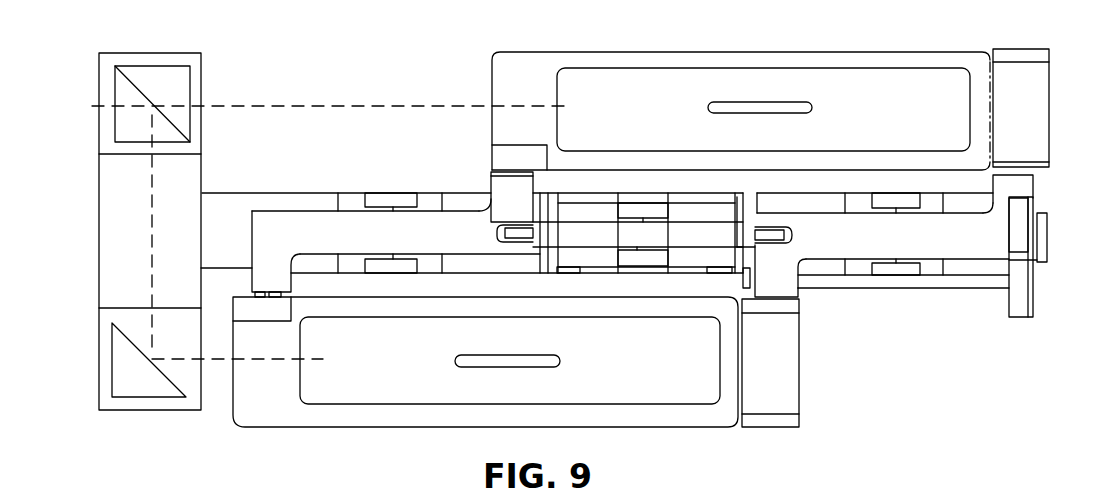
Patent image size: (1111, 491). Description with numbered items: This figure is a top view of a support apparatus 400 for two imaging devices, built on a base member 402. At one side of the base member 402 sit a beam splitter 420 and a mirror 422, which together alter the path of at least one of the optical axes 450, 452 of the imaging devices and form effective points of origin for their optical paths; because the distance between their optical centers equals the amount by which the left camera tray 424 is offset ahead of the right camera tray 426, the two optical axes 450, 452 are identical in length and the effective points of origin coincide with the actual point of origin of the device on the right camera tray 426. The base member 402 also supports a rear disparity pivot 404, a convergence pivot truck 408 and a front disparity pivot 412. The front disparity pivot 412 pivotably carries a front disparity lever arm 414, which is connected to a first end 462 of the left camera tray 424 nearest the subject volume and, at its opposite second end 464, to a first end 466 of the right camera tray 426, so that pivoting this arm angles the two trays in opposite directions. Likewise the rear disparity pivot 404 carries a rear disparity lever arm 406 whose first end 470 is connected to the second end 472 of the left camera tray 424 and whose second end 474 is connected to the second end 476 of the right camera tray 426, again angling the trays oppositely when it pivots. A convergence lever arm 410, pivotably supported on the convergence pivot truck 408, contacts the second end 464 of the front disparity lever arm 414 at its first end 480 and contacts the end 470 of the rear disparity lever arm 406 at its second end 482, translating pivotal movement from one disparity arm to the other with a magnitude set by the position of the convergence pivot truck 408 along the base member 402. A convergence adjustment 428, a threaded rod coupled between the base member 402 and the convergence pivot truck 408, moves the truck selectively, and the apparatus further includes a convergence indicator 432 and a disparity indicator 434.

The support apparatus 400 is at (296, 179).
The base member 402 is at (314, 205).
The rear disparity pivot 404 is at (858, 270).
The rear disparity pivot lever arm 406 is at (896, 250).
The convergence pivot truck 408 is at (639, 258).
The convergence lever arm 410 is at (638, 233).
The front disparity pivot 412 is at (421, 193).
The front disparity lever arm 414 is at (517, 246).
The beam splitter 420 is at (193, 63).
The mirror 422 is at (125, 352).
The left camera tray 424 is at (604, 371).
The right camera tray 426 is at (836, 118).
The convergence adjustment 428 is at (1047, 241).
The convergence indicator 432 is at (1034, 308).
The disparity indicator 434 is at (1035, 208).
The optical axis 450 is at (152, 201).
The optical axis 452 is at (293, 106).
The first end of left camera tray 462 is at (247, 404).
The second end of front disparity lever arm 464 is at (521, 187).
The first end of right camera tray 466 is at (524, 62).
The first end of rear disparity lever arm 470 is at (780, 283).
The second end of left camera tray 472 is at (737, 413).
The second end of rear disparity lever arm 474 is at (1022, 191).
The second end of right camera tray 476 is at (980, 63).
The first end of convergence lever arm 480 is at (538, 243).
The second end of convergence lever arm 482 is at (746, 230).